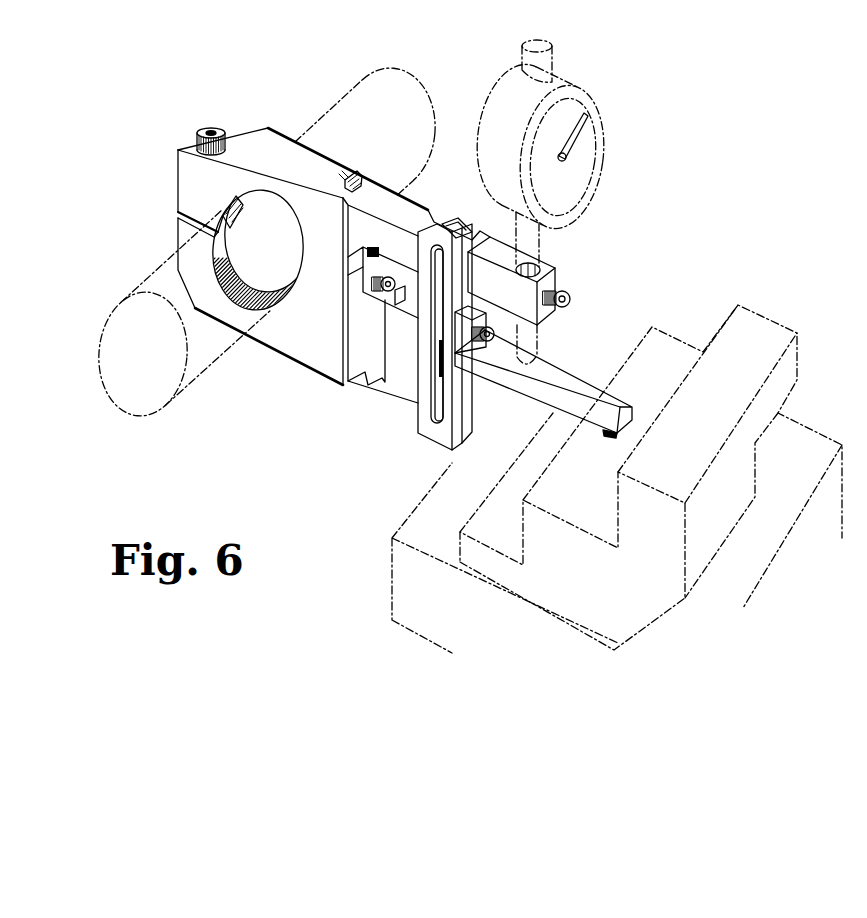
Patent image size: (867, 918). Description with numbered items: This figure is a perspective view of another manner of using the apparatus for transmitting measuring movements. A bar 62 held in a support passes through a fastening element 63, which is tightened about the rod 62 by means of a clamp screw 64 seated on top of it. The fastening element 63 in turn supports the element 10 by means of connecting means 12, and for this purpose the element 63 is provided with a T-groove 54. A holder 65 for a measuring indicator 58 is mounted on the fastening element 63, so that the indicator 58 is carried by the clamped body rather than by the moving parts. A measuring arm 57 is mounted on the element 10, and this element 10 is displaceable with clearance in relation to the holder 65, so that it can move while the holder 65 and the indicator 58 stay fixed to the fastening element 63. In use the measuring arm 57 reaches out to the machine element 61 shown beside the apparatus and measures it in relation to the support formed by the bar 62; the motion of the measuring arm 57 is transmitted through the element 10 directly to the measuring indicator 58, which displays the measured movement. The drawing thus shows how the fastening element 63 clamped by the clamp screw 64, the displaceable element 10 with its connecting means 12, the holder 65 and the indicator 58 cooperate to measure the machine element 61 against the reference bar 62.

The element 10 is at (468, 224).
The connecting means 12 is at (396, 392).
The T-groove 54 is at (351, 180).
The measuring arm 57 is at (565, 364).
The measuring indicator 58 is at (592, 110).
The machine element 61 is at (757, 318).
The bar 62 is at (206, 368).
The fastening element 63 is at (277, 348).
The clamping knob 64 is at (216, 131).
The holder 65 is at (414, 203).